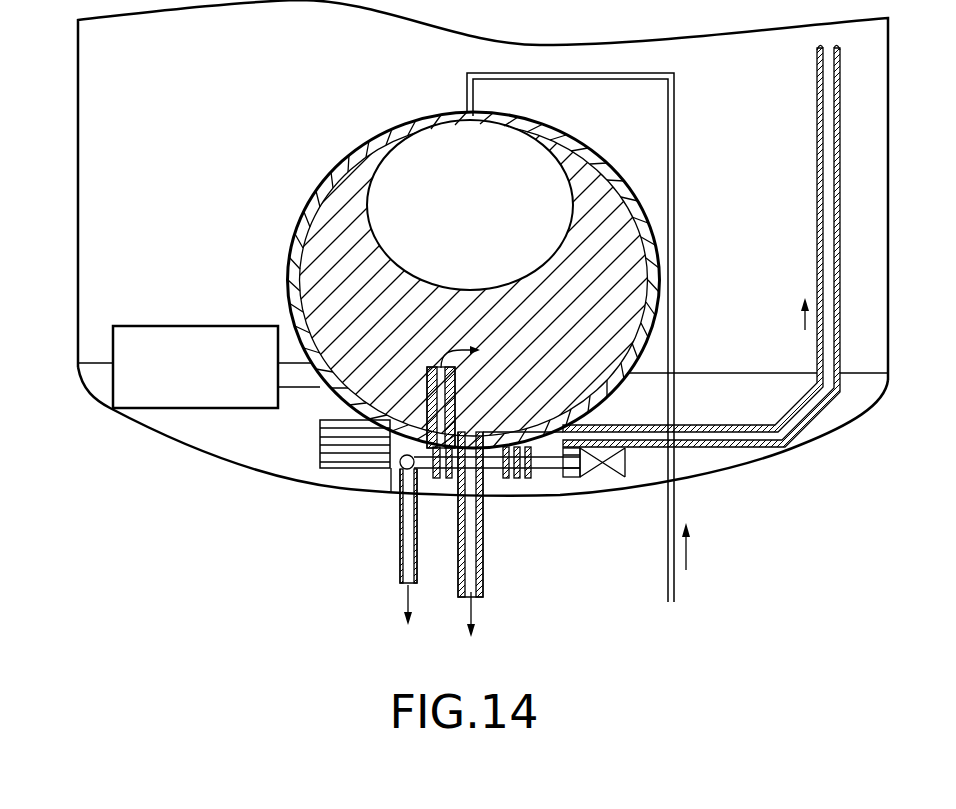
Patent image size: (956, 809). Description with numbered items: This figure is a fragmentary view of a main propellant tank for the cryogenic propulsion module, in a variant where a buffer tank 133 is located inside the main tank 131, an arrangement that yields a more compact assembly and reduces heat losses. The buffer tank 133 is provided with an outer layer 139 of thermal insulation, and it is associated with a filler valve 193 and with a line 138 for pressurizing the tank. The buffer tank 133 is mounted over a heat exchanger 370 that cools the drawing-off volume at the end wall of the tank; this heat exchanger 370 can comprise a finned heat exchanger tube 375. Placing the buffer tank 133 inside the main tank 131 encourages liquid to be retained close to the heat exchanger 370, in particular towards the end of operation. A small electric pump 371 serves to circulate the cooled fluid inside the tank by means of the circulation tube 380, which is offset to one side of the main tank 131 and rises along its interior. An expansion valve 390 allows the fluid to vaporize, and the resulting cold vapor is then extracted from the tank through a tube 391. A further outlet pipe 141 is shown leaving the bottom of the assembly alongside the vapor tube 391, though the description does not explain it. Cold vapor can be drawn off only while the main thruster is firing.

The main tank 131 is at (78, 157).
The buffer tank 133 is at (400, 122).
The outer layer of thermal insulation 139 is at (312, 205).
The line for pressurizing the tank 138 is at (674, 181).
The circulation tube 380 is at (817, 102).
The filler valve 193 is at (205, 326).
The electric pump 371 is at (333, 465).
The finned heat exchanger tube 375 is at (508, 480).
The heat exchanger 370 is at (568, 480).
The expansion valve 390 is at (612, 478).
The outlet pipe 141 is at (485, 585).
The tube 391 is at (400, 576).